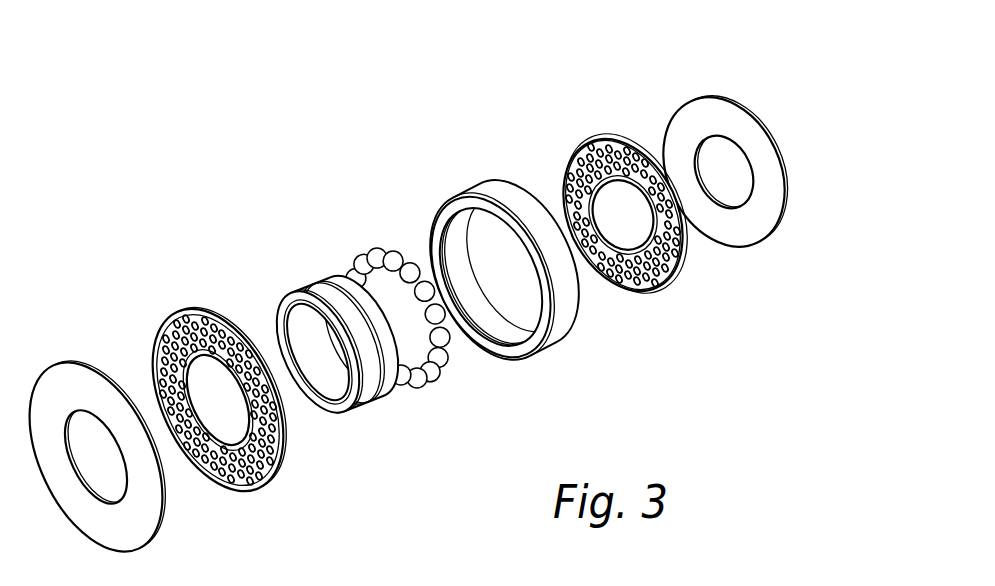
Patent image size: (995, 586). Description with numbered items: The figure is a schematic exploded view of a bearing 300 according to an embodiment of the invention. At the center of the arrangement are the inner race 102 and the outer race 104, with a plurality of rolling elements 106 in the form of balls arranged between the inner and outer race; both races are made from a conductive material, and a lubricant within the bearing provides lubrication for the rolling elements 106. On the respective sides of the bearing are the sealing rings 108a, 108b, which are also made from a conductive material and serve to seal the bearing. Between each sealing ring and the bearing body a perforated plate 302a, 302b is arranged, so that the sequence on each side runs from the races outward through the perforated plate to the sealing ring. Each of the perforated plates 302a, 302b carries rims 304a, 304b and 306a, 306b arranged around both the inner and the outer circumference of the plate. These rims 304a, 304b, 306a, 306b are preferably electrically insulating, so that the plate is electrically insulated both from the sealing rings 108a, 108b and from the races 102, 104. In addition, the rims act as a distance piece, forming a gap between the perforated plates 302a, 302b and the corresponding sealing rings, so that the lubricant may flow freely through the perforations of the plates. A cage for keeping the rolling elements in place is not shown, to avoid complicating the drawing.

The bearing 300 is at (246, 114).
The inner race 102 is at (332, 287).
The outer race 104 is at (505, 190).
The rolling elements 106 is at (370, 255).
The sealing ring 108a is at (70, 380).
The sealing ring 108b is at (697, 107).
The perforated plate 302a is at (262, 392).
The perforated plate 302b is at (652, 217).
The rim 304a is at (282, 458).
The rim 304b is at (678, 278).
The rim 306a is at (222, 450).
The rim 306b is at (629, 258).